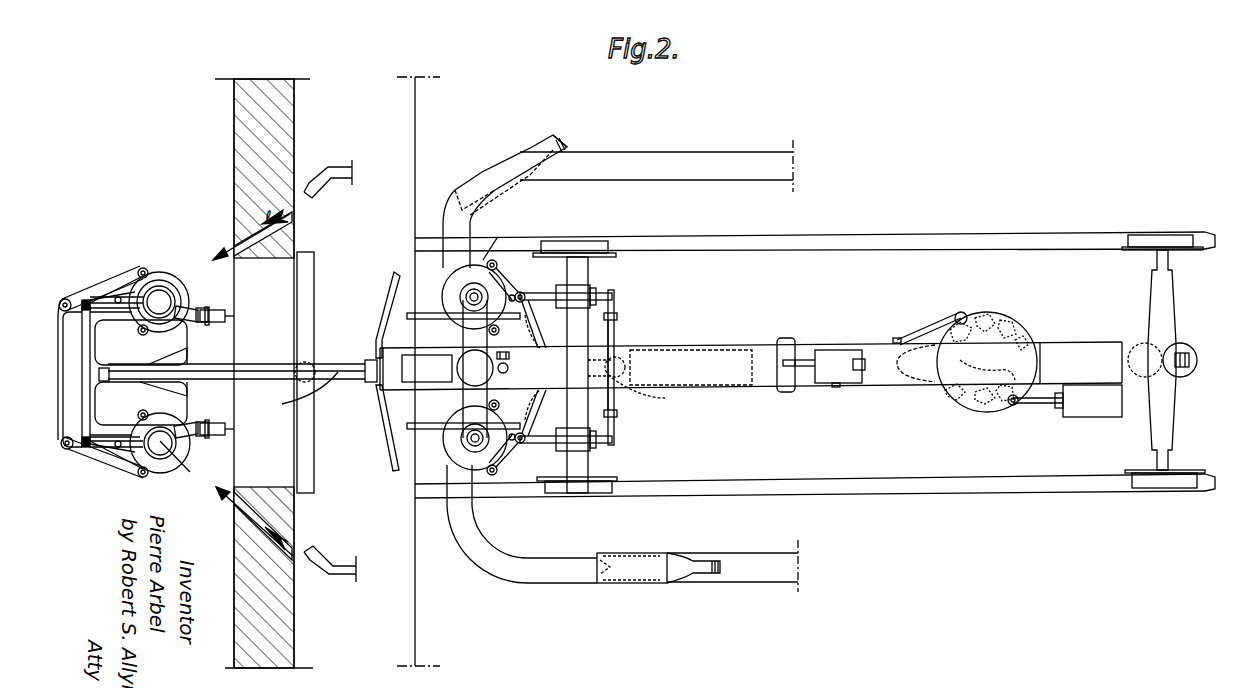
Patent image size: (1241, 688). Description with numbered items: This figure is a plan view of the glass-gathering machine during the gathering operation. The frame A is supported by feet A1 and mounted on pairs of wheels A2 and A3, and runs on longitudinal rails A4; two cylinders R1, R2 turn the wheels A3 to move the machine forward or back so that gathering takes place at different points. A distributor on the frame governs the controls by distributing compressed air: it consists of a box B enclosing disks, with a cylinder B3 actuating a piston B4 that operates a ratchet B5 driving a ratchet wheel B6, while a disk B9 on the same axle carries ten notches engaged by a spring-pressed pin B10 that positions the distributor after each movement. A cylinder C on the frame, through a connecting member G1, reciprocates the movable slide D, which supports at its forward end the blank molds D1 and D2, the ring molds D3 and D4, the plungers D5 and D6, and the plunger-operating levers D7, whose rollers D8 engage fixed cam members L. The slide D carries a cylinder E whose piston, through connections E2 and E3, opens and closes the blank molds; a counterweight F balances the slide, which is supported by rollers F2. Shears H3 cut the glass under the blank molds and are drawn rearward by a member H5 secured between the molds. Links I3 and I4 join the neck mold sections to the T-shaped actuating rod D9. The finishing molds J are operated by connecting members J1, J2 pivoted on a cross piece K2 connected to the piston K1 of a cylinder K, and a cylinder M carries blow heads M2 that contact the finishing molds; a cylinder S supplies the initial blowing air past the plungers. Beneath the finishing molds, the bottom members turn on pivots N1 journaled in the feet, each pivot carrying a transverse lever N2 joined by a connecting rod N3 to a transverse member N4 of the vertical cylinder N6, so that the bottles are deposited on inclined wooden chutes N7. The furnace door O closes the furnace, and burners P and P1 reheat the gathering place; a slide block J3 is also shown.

The door O is at (316, 445).
The burner P1 is at (337, 170).
The burner P is at (337, 568).
The movable slide D is at (329, 360).
The T-shaped actuating rod D9 is at (295, 394).
The shears H3 is at (392, 290).
The cylinder C is at (788, 322).
The cylinder S is at (427, 368).
The cylinder M is at (483, 369).
The blow head M2 is at (468, 296).
The fixed cam member L is at (430, 319).
The connecting member J2 is at (506, 273).
The connecting member J1 is at (503, 366).
The finishing mold J is at (490, 239).
The cross piece K2 is at (530, 396).
The stationary longitudinal pivot N1 is at (545, 284).
The foot A1 is at (568, 333).
The transverse lever N2 is at (608, 307).
The connecting rod N3 is at (617, 317).
The transverse member N4 is at (614, 337).
The vertical cylinder N6 is at (627, 367).
The cylinder K is at (722, 349).
The piston K1 is at (653, 397).
The wheel A2 is at (578, 250).
The longitudinal rail A4 is at (865, 252).
The wheel A3 is at (1155, 240).
The frame A is at (1133, 375).
The cylinder R1 is at (1160, 345).
The cylinder R2 is at (1181, 376).
The cylinder B3 is at (1100, 420).
The piston B4 is at (1060, 408).
The ratchet B5 is at (1011, 406).
The box B is at (1010, 318).
The disk B9 is at (985, 312).
The ratchet wheel B6 is at (978, 400).
The spring-pressed pin B10 is at (957, 310).
The counterweight F is at (840, 368).
The connecting member G1 is at (814, 372).
The inclined wooden chute N7 is at (545, 552).
The cylinder E is at (122, 372).
The connection E3 is at (88, 292).
The link I4 is at (100, 295).
The link I3 is at (118, 300).
The blank mold D2 is at (170, 290).
The ring mold D4 is at (162, 280).
The ring mold D3 is at (162, 460).
The blank mold D1 is at (182, 393).
The member H5 is at (168, 345).
The plunger D5 is at (184, 462).
The plunger D6 is at (185, 303).
The plunger-operating lever D7 is at (200, 306).
The roller D8 is at (227, 316).
The roller F2 is at (132, 335).
The connection E2 is at (132, 411).
The slide block J3 is at (99, 376).